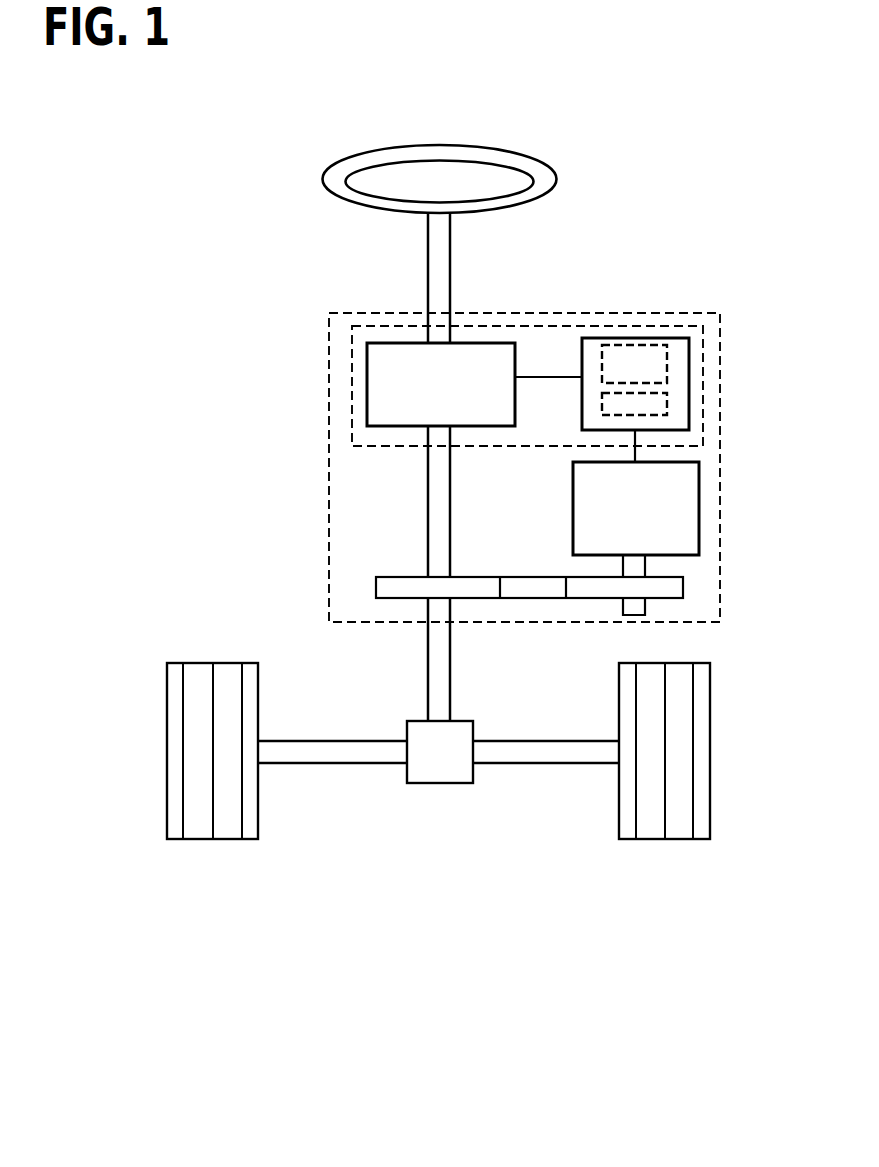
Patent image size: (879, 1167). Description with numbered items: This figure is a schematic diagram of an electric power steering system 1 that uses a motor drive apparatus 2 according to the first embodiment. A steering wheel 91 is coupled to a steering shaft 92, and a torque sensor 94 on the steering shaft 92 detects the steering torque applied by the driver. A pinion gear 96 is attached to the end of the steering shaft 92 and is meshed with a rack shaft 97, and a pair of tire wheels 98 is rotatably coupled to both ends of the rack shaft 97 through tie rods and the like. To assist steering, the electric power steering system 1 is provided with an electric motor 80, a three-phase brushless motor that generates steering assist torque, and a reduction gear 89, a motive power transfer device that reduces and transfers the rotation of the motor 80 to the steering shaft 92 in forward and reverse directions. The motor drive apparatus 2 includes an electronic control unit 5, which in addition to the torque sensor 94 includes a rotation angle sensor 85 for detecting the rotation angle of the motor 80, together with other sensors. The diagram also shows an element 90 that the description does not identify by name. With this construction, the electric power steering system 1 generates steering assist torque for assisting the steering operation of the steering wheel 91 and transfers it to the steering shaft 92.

The electric power steering system 1 is at (620, 312).
The motor drive apparatus 2 is at (558, 325).
The electronic control unit 5 is at (667, 355).
The rotation angle sensor 85 is at (667, 400).
The electric motor 80 is at (699, 487).
The reduction gear 89 is at (683, 585).
The electric power steering system 90 is at (390, 882).
The steering wheel 91 is at (322, 181).
The steering shaft 92 is at (428, 275).
The torque sensor 94 is at (367, 380).
The pinion gear 96 is at (431, 784).
The rack shaft 97 is at (326, 764).
The tire wheels 98 is at (229, 840).